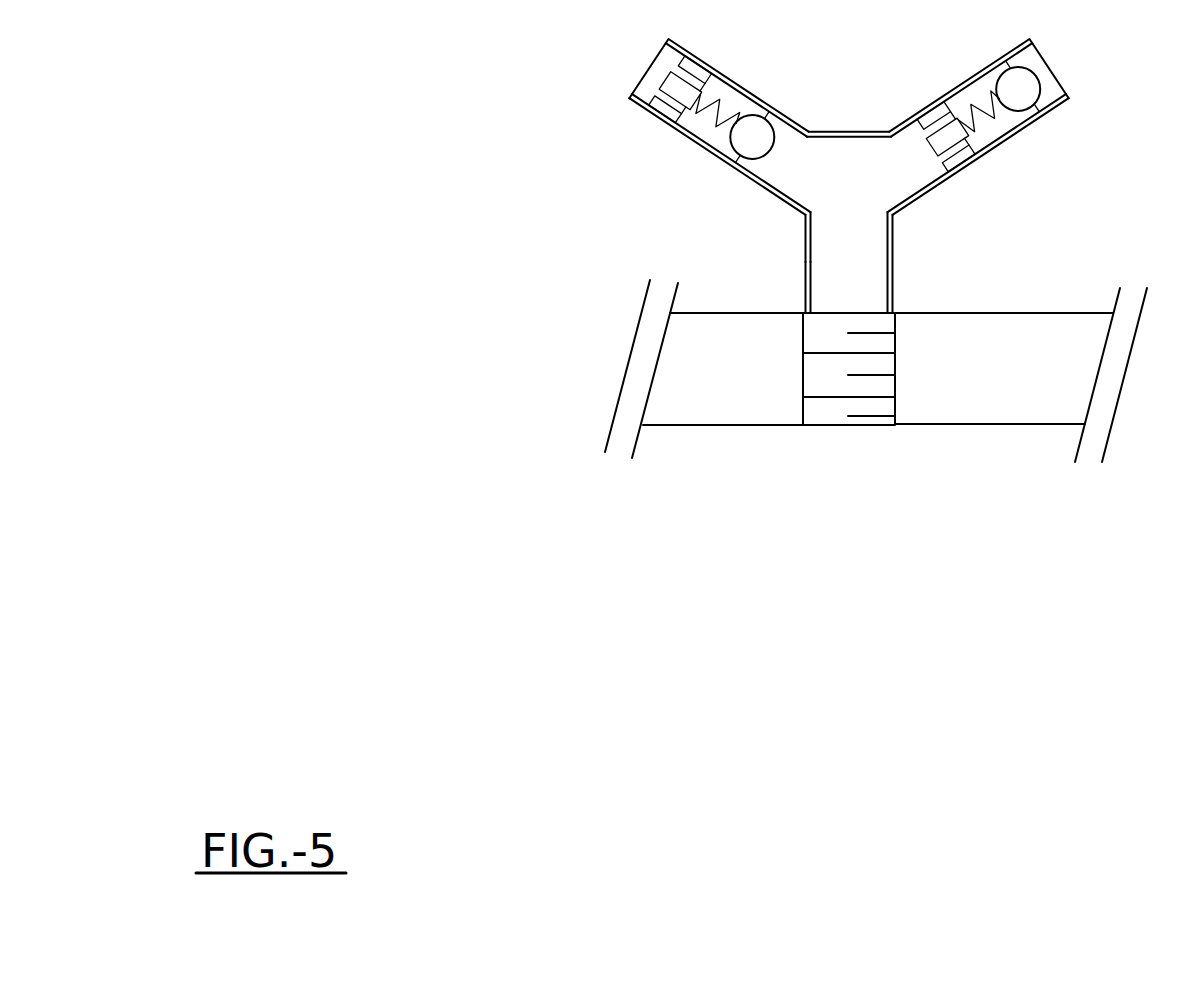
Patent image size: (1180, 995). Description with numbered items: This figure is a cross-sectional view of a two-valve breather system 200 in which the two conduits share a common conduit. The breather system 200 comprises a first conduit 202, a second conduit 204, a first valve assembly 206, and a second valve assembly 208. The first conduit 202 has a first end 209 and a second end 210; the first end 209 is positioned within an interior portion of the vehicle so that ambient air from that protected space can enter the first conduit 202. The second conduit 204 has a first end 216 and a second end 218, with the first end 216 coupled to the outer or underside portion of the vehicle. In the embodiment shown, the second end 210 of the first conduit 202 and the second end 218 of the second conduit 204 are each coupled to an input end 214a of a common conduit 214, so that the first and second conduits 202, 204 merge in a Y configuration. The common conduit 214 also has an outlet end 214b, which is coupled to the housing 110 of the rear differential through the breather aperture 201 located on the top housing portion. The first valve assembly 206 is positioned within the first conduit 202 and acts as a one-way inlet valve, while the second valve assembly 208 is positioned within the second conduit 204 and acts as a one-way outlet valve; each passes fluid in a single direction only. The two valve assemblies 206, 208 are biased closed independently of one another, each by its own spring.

The breather system 200 is at (830, 196).
The breather aperture 201 is at (827, 380).
The first conduit 202 is at (1028, 127).
The second conduit 204 is at (651, 136).
The first valve assembly 206 is at (984, 117).
The second valve assembly 208 is at (712, 128).
The first end 209 is at (1056, 70).
The second end 210 is at (892, 187).
The common conduit 214 is at (752, 287).
The input end 214a is at (823, 242).
The outlet end 214b is at (823, 265).
The first end 216 is at (646, 71).
The second end 218 is at (800, 182).
The housing 110 is at (1062, 335).